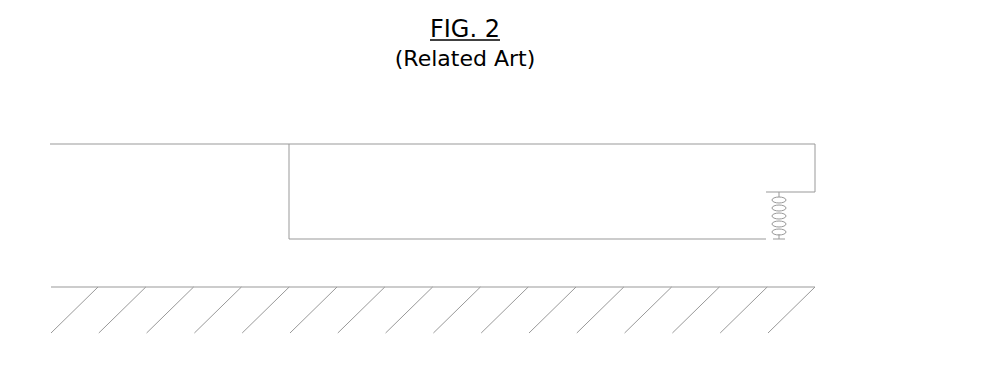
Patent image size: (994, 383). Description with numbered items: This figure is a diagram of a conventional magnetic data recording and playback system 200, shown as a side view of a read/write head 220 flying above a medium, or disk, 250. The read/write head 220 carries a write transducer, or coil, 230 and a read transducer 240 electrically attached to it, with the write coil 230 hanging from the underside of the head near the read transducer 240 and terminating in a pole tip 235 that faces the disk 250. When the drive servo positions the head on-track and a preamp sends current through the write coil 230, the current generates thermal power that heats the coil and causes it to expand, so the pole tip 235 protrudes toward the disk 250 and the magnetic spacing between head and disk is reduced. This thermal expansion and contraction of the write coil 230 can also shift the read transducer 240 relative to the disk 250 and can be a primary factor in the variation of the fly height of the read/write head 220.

The magnetic data recording and playback system 200 is at (203, 120).
The read/write head 220 is at (580, 144).
The read transducer 240 is at (817, 161).
The write transducer 230 is at (786, 210).
The pole tip 235 is at (780, 238).
The medium 250 is at (402, 333).